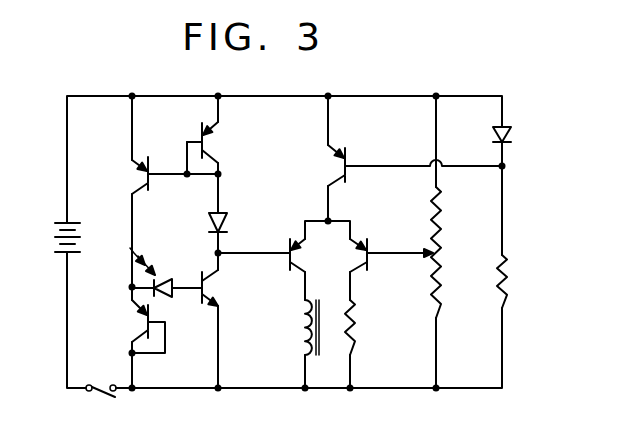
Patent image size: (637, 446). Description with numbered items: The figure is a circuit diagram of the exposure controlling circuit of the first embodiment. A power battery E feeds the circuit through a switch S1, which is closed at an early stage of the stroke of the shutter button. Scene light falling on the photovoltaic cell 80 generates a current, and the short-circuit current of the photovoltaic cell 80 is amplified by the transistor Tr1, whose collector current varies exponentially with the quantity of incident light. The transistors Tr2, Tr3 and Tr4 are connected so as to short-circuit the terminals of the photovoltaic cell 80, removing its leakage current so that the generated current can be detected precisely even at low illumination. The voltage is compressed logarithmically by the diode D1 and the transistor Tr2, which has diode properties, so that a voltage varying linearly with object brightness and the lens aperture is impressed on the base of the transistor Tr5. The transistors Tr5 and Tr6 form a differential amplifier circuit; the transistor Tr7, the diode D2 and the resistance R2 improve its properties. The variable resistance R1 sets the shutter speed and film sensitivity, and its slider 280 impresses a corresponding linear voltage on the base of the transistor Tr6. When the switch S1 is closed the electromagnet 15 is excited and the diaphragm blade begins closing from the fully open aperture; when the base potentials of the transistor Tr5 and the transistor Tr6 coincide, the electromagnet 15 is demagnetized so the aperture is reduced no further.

The power battery E is at (51, 237).
The switch S1 is at (97, 395).
The transistor Tr1 is at (205, 289).
The transistor Tr2 is at (206, 149).
The transistor Tr3 is at (145, 178).
The transistor Tr4 is at (146, 326).
The transistor Tr5 is at (293, 257).
The transistor Tr6 is at (365, 255).
The transistor Tr7 is at (343, 168).
The diode D1 is at (226, 216).
The diode D2 is at (509, 128).
The photovoltaic cell 80 is at (172, 297).
The electromagnet 15 is at (303, 318).
The slider 280 is at (402, 250).
The variable resistance R1 is at (441, 287).
The resistance R2 is at (508, 289).